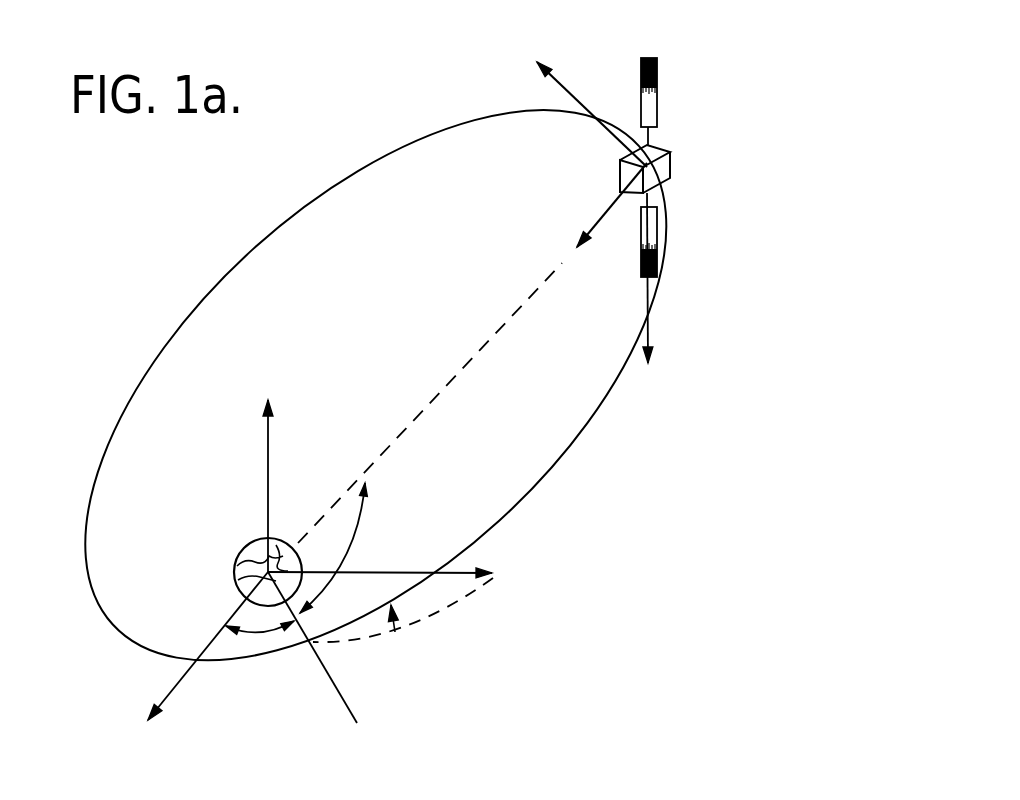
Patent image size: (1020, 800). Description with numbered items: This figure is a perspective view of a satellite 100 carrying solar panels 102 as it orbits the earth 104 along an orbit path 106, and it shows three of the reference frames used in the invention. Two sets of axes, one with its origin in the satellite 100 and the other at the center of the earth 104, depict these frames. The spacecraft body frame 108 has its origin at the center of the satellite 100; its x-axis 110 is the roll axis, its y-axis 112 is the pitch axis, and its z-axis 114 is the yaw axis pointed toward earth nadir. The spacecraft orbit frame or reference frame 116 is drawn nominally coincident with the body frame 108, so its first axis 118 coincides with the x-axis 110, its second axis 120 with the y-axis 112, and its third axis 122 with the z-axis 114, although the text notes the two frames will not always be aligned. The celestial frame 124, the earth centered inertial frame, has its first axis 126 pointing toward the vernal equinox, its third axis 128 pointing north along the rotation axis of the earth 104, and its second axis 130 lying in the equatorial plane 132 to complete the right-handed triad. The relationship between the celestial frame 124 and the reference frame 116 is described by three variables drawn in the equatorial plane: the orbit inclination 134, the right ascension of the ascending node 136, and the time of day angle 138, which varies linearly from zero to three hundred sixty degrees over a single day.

The satellite 100 is at (668, 162).
The solar panels 102 is at (652, 90).
The earth 104 is at (235, 578).
The orbit path 106 is at (588, 426).
The spacecraft body frame (B) 108 is at (531, 157).
The x-axis 110 is at (589, 88).
The y-axis 112 is at (716, 295).
The z-axis 114 is at (507, 219).
The spacecraft orbit frame or reference frame (R) 116 is at (756, 119).
The 1-axis 118 is at (566, 84).
The 2-axis 120 is at (648, 333).
The 3-axis 122 is at (598, 222).
The celestial frame (I) 124 is at (174, 488).
The 1-axis 126 is at (183, 673).
The 3-axis 128 is at (268, 463).
The 2-axis 130 is at (420, 571).
The equatorial plane 132 is at (476, 603).
The orbit inclination 134 is at (395, 632).
The right ascension of the ascending node 136 is at (243, 648).
The time of day angle 138 is at (397, 510).